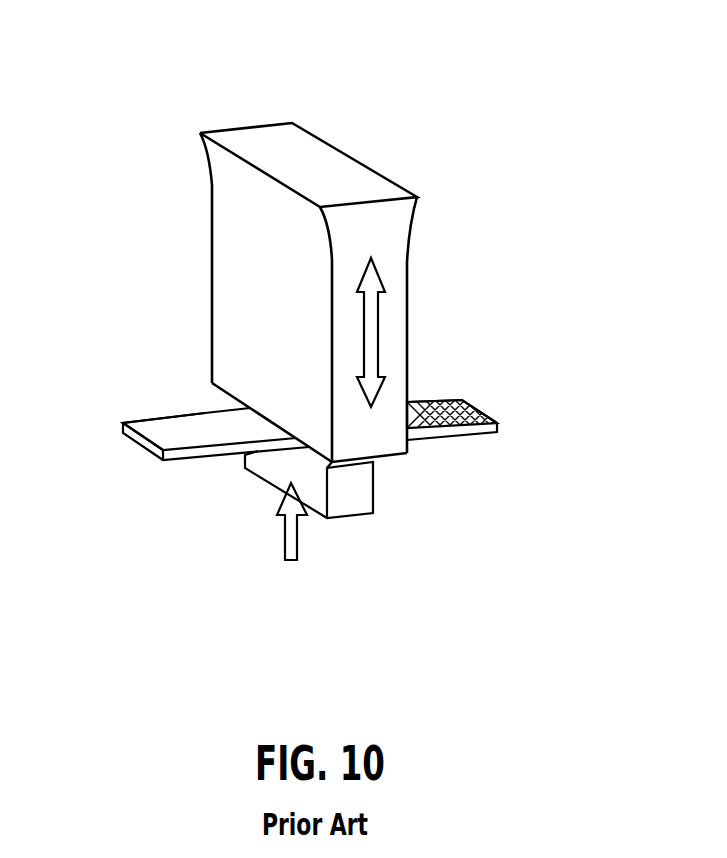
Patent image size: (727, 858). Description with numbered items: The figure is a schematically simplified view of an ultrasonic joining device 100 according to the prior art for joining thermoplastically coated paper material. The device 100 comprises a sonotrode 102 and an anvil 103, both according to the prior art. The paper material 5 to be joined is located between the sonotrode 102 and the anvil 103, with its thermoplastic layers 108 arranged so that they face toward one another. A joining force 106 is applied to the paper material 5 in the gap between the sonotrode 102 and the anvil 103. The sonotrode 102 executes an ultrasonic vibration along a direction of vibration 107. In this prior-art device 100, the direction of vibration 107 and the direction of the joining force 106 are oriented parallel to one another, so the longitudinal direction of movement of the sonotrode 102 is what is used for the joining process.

The ultrasonic joining device 100 is at (134, 85).
The sonotrode 102 is at (380, 231).
The anvil 103 is at (358, 492).
The joining force 106 is at (290, 534).
The direction of vibration 107 is at (372, 313).
The thermoplastic layers 108 is at (443, 393).
The paper material 5 is at (183, 428).